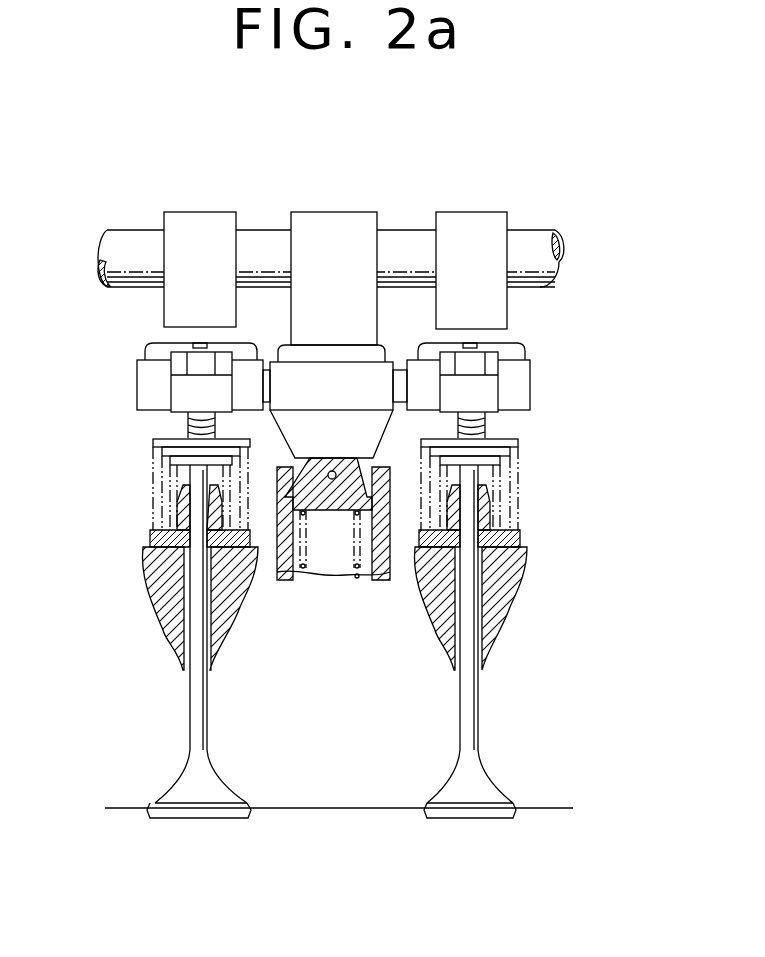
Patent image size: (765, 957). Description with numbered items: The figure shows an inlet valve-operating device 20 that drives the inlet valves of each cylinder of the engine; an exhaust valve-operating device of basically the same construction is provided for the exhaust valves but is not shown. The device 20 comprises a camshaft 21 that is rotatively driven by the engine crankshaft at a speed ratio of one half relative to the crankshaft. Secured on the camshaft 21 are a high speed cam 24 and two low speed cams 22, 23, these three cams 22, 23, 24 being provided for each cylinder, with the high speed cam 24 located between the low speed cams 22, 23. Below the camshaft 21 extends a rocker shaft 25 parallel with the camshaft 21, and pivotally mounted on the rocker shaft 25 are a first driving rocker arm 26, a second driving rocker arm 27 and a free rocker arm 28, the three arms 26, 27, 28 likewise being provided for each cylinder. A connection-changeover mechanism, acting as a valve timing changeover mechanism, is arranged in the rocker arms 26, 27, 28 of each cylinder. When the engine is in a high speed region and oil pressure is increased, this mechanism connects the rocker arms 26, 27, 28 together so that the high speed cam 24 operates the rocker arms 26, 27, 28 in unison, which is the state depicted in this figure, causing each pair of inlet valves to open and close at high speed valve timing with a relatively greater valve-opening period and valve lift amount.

The inlet valve-operating device 20 is at (542, 229).
The camshaft 21 is at (556, 268).
The low speed cam 22 is at (198, 235).
The low speed cam 23 is at (471, 245).
The high speed cam 24 is at (333, 233).
The rocker shaft 25 is at (398, 382).
The first driving rocker arm 26 is at (150, 384).
The second driving rocker arm 27 is at (515, 376).
The free rocker arm 28 is at (367, 395).